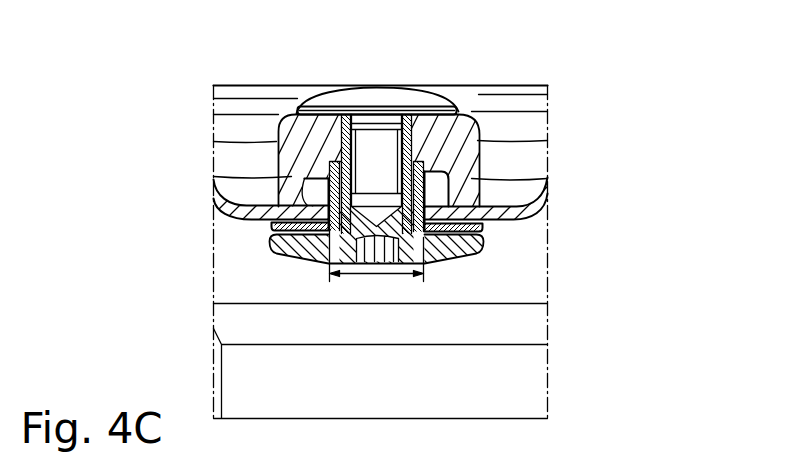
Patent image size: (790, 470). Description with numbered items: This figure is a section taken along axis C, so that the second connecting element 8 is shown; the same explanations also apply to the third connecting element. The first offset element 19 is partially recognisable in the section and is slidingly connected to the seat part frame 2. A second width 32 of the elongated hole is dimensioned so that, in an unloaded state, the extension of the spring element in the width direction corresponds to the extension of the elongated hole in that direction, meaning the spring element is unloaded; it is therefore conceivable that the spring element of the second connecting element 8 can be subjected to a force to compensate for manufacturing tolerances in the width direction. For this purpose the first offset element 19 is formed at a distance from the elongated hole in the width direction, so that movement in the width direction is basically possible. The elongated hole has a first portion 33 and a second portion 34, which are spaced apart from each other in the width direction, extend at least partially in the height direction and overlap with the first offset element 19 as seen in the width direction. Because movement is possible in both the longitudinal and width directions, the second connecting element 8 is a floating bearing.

The second connecting element 8 is at (399, 106).
The first offset element 19 is at (470, 125).
The first portion 33 is at (303, 184).
The second portion 34 is at (447, 183).
The seat part frame 2 is at (505, 212).
The second width 32 is at (377, 268).